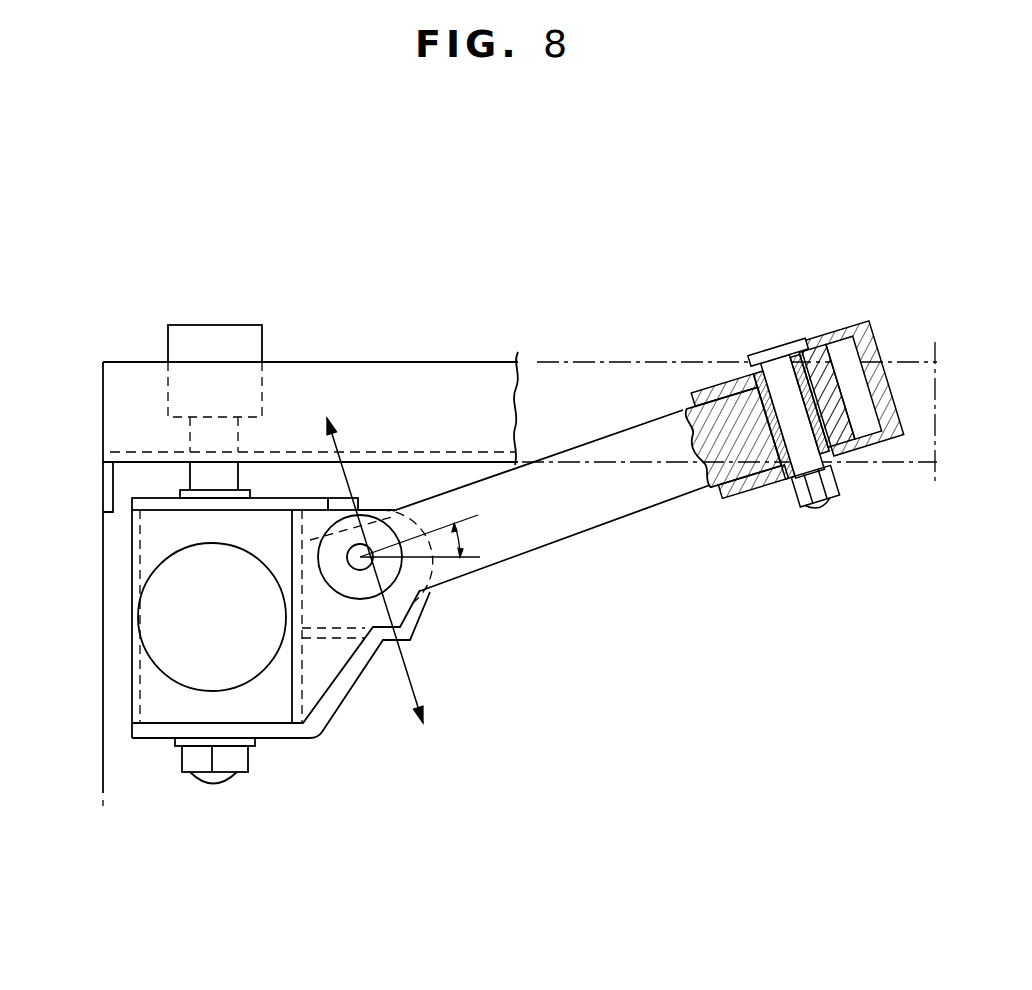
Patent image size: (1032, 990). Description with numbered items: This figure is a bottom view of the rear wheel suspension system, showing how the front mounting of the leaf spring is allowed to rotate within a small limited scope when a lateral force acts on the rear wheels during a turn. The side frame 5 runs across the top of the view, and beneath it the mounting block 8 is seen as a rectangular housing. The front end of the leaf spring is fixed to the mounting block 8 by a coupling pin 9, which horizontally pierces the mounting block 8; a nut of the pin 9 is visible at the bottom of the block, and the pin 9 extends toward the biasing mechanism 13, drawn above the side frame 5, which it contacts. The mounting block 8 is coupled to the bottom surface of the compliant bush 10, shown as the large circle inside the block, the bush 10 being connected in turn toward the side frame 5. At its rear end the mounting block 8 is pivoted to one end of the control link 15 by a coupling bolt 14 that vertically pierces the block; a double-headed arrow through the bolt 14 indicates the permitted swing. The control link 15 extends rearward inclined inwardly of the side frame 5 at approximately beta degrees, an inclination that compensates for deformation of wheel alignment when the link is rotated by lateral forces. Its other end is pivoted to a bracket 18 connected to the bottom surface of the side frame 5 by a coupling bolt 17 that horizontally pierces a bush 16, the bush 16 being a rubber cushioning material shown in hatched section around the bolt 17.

The side frame 5 is at (397, 375).
The mounting block 8 is at (352, 720).
The coupling pin 9 is at (226, 768).
The compliant bush 10 is at (157, 620).
The biasing mechanism 13 is at (192, 332).
The coupling bolt 14 is at (372, 566).
The control link 15 is at (572, 518).
The bush 16 is at (878, 443).
The coupling bolt 17 is at (775, 345).
The bracket 18 is at (747, 492).